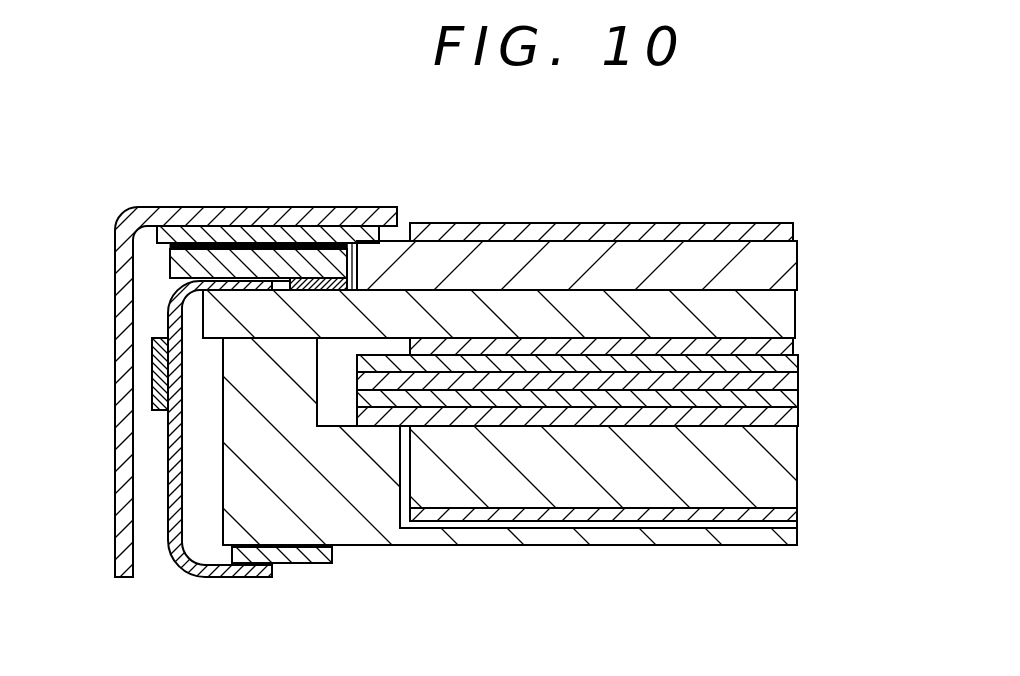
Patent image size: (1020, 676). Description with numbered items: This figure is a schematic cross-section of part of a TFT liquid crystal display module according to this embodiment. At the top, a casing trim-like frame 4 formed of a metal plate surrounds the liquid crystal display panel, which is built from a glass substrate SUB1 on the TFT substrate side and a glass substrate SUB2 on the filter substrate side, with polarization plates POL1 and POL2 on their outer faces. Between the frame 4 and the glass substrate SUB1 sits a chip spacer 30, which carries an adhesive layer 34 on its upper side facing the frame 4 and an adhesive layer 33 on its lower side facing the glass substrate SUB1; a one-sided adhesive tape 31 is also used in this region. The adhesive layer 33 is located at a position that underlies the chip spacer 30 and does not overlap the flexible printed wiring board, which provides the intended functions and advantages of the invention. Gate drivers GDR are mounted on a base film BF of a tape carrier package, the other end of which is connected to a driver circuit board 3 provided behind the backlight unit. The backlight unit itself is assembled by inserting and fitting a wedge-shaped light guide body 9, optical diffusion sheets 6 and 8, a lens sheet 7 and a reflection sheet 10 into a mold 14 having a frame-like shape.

The adhesive layer 34 is at (218, 212).
The chip spacer 30 is at (247, 270).
The adhesive layer 33 is at (300, 243).
The one-sided adhesive tape 31 is at (347, 233).
The frame 4 is at (383, 210).
The polarization plate POL2 is at (788, 231).
The glass substrate on the filter substrate side SUB2 is at (780, 278).
The glass substrate on the TFT substrate side SUB1 is at (780, 307).
The polarization plate POL1 is at (790, 349).
The optical diffusion sheet 6 is at (790, 362).
The lens sheet 7 is at (806, 370).
The optical diffusion sheet 8 is at (800, 418).
The wedge-shaped light guide body 9 is at (787, 460).
The reflection sheet 10 is at (793, 513).
The gate driver GDR is at (152, 388).
The base film BF is at (190, 572).
The driver circuit board 3 is at (298, 560).
The mold 14 is at (370, 537).